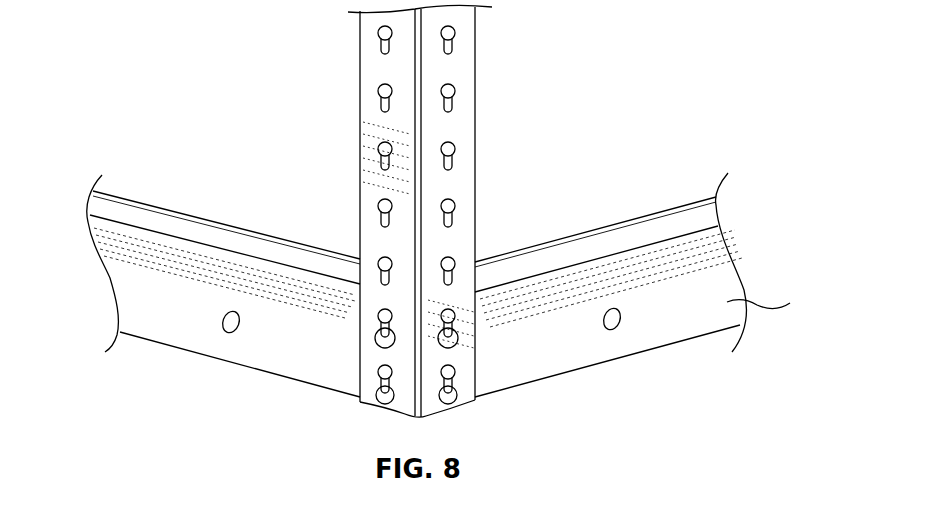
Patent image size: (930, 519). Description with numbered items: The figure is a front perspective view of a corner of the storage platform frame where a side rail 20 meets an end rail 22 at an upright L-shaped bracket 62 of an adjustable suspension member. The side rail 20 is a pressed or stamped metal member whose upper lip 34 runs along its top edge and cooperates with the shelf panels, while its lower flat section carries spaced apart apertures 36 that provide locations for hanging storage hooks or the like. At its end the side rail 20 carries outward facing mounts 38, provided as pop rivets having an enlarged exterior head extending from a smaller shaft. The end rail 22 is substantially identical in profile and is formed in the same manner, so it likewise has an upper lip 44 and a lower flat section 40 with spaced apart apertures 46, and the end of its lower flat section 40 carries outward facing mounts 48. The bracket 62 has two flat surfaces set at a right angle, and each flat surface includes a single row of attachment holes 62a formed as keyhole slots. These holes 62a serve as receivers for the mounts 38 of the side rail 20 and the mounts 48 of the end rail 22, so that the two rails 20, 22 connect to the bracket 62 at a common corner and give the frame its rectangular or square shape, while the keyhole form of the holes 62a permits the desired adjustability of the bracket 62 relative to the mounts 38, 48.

The side rail 20 is at (218, 280).
The end rail 22 is at (645, 272).
The upper lip 34 is at (226, 216).
The apertures 36 is at (227, 336).
The outward facing mounts 38 is at (378, 338).
The lower flat section 40 is at (771, 305).
The upper lip 44 is at (653, 207).
The apertures 46 is at (622, 331).
The outward facing mounts 48 is at (460, 339).
The L-shaped bracket 62 is at (430, 219).
The attachment holes 62a is at (381, 214).